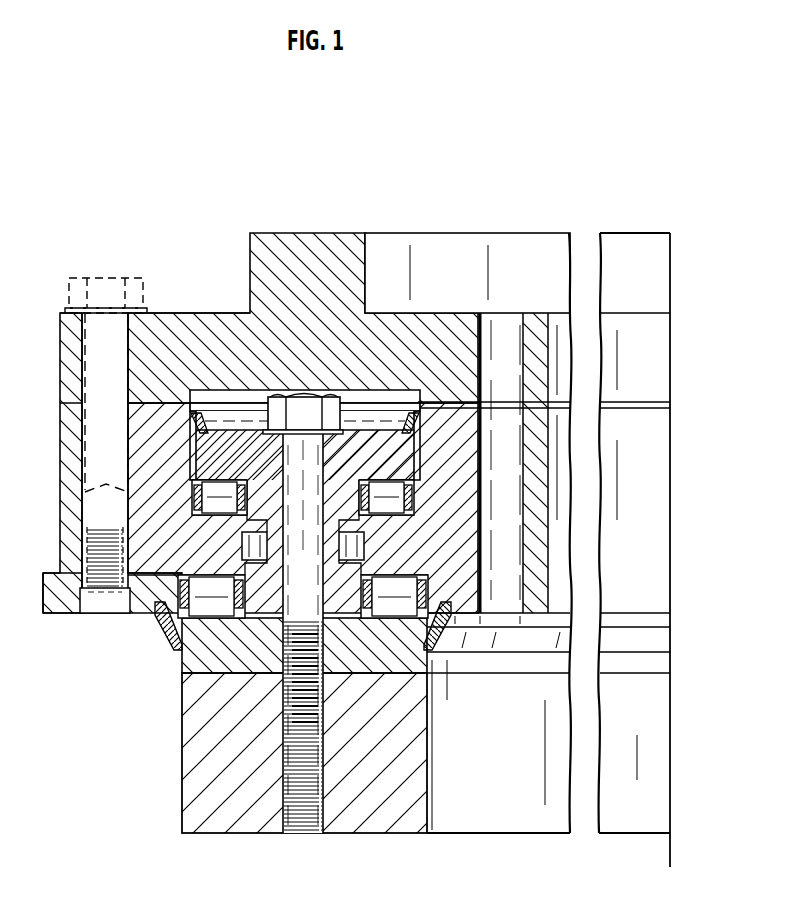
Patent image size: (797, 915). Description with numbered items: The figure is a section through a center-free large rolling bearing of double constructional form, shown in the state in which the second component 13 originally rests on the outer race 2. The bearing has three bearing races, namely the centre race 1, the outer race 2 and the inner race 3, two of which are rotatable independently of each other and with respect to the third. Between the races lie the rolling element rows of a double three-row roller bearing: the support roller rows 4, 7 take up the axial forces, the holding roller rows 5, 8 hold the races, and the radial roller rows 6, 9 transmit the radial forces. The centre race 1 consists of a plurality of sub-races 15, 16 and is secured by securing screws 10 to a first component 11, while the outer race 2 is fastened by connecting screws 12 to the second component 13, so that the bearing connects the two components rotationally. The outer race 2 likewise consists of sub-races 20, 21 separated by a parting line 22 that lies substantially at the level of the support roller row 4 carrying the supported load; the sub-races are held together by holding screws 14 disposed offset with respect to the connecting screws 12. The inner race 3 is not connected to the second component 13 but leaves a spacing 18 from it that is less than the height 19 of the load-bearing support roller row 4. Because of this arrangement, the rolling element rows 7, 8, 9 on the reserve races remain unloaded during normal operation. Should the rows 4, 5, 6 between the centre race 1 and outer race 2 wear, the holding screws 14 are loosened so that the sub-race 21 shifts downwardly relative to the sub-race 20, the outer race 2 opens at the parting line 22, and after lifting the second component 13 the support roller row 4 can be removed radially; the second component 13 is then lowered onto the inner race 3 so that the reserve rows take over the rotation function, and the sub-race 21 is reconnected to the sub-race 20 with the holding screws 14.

The centre race 1 is at (238, 640).
The outer race 2 is at (58, 467).
The inner race 3 is at (413, 537).
The support roller row 4 is at (192, 642).
The holding roller row 5 is at (200, 494).
The radial roller row 6 is at (242, 545).
The support roller row 7 is at (392, 600).
The holding roller row 8 is at (400, 493).
The radial roller row 9 is at (355, 550).
The securing screw 10 is at (277, 408).
The first component 11 is at (360, 770).
The connecting screw 12 is at (110, 290).
The second component 13 is at (320, 275).
The holding screw 14 is at (108, 610).
The sub-race 15 is at (400, 460).
The sub-race 16 is at (400, 648).
The spacing 18 is at (632, 450).
The height 19 is at (268, 577).
The sub-race 20 is at (72, 448).
The sub-race 21 is at (66, 614).
The parting line 22 is at (117, 555).